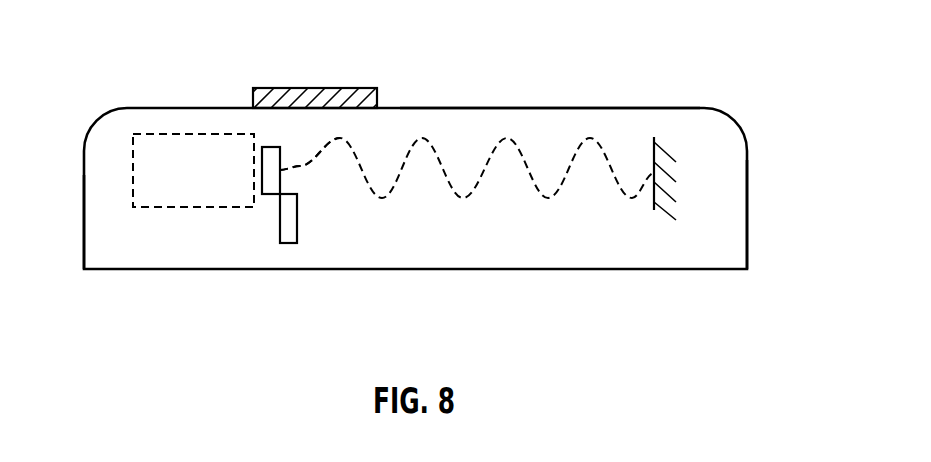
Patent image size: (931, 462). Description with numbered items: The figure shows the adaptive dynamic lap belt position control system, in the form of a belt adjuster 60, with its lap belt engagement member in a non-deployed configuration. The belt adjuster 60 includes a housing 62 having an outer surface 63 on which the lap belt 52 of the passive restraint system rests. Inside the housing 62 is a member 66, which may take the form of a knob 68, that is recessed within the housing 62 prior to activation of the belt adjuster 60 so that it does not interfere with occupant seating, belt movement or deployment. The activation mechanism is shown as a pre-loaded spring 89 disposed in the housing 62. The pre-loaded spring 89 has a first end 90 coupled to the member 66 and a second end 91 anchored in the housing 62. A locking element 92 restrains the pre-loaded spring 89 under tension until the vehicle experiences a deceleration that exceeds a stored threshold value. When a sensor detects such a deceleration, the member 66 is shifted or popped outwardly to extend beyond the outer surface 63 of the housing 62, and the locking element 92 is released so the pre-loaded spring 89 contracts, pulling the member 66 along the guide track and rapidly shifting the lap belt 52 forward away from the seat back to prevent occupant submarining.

The belt adjuster 60 is at (746, 103).
The housing 62 is at (757, 233).
The outer surface 63 is at (541, 108).
The lap belt 52 is at (313, 88).
The member 66 is at (115, 168).
The knob 68 is at (197, 153).
The pre-loaded spring 89 is at (456, 226).
The first end 90 is at (315, 158).
The second end 91 is at (633, 197).
The locking element 92 is at (290, 228).